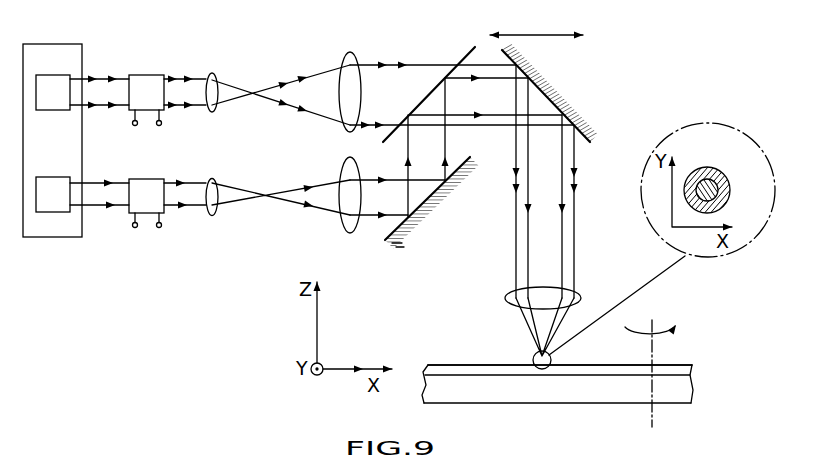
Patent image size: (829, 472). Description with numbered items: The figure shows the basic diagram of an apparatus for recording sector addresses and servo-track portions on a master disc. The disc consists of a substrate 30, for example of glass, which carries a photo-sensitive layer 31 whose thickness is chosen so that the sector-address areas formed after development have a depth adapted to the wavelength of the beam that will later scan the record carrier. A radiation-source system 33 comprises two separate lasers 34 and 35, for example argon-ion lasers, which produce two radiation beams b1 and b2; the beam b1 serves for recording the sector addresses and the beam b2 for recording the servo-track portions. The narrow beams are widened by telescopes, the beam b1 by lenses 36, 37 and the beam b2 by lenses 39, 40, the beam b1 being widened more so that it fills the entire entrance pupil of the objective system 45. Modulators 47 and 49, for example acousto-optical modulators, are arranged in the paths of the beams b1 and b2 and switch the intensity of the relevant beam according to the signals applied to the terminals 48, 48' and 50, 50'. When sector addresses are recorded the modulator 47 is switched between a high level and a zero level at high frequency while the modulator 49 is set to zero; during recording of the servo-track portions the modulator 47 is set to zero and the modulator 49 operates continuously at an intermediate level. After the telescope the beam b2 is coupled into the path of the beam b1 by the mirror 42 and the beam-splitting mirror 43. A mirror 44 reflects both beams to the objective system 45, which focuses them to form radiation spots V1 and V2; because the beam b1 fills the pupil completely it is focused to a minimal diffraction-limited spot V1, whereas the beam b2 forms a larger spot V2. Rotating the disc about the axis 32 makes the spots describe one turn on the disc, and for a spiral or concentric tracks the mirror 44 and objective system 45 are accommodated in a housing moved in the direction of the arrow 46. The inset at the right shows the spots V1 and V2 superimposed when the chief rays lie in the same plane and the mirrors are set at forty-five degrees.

The substrate 30 is at (472, 387).
The photo-sensitive layer 31 is at (443, 372).
The axis 32 is at (613, 295).
The radiation-source system 33 is at (33, 230).
The laser 34 is at (48, 82).
The laser 35 is at (58, 203).
The lens 36 is at (218, 112).
The lens 37 is at (348, 130).
The lens 39 is at (217, 217).
The lens 40 is at (350, 238).
The mirror 42 is at (420, 213).
The beam-splitting mirror 43 is at (472, 51).
The mirror 44 is at (572, 113).
The objective system 45 is at (507, 297).
The arrow 46 is at (522, 35).
The modulator 47 is at (148, 75).
The terminal 48 is at (135, 132).
The terminal 48' is at (172, 132).
The modulator 49 is at (149, 213).
The terminal 50 is at (132, 234).
The terminal 50' is at (181, 227).
The radiation beam b1 is at (87, 90).
The radiation beam b2 is at (93, 195).
The radiation spot V1 is at (708, 170).
The radiation spot V2 is at (723, 200).